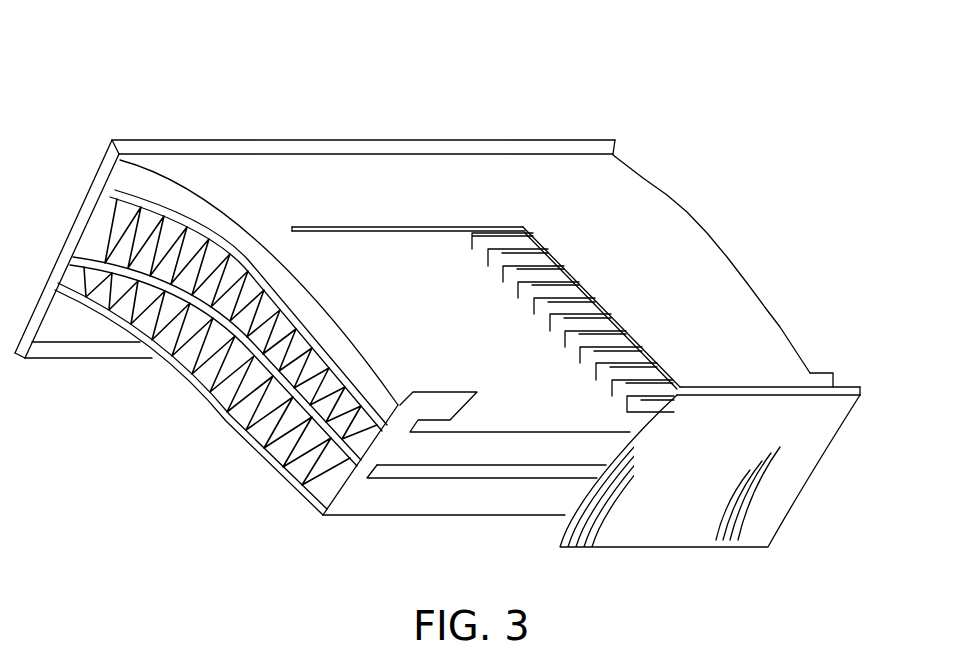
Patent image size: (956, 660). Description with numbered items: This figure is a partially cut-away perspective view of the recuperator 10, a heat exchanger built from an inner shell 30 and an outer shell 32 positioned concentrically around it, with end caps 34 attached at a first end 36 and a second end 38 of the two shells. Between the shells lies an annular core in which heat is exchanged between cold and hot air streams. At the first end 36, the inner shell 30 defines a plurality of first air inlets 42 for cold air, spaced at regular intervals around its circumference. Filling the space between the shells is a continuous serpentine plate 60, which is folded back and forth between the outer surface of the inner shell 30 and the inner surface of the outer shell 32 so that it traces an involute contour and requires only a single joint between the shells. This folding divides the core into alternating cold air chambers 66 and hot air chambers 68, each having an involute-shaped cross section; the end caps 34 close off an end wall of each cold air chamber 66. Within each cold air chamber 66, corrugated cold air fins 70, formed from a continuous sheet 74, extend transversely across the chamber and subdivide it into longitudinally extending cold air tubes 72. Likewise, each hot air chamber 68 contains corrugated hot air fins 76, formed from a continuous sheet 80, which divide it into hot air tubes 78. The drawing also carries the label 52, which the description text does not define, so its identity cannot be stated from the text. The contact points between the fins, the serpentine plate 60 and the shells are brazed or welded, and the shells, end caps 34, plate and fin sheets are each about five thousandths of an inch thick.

The recuperator 10 is at (114, 100).
The inner shell 30 is at (781, 494).
The outer shell 32 is at (574, 138).
The end caps 34 is at (330, 478).
The first end 36 is at (123, 472).
The second end 38 is at (786, 309).
The first air inlets 42 is at (480, 420).
The corrugated fin 52 is at (200, 255).
The serpentine plate 60 is at (733, 284).
The cold air chambers 66 is at (566, 426).
The hot air chambers 68 is at (53, 275).
The cold air fins 70 is at (521, 253).
The cold air tubes 72 is at (527, 293).
The continuous sheet 74 is at (593, 297).
The hot air fins 76 is at (132, 205).
The hot air tubes 78 is at (230, 388).
The continuous sheet 80 is at (268, 444).